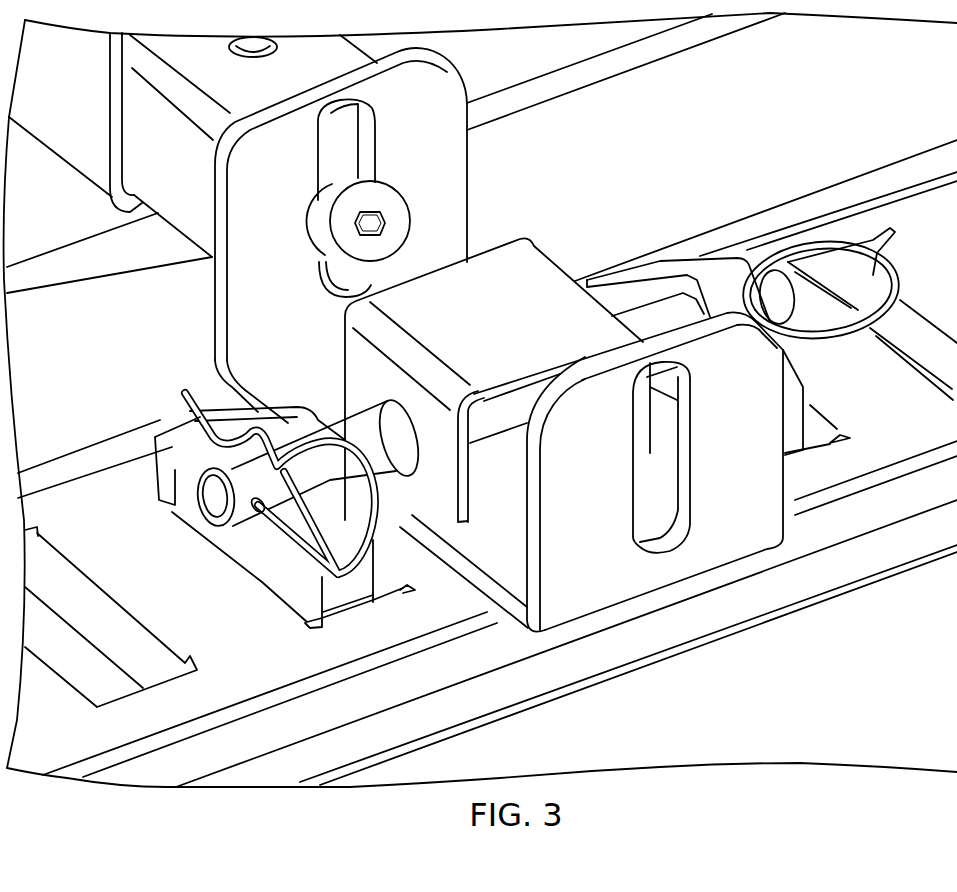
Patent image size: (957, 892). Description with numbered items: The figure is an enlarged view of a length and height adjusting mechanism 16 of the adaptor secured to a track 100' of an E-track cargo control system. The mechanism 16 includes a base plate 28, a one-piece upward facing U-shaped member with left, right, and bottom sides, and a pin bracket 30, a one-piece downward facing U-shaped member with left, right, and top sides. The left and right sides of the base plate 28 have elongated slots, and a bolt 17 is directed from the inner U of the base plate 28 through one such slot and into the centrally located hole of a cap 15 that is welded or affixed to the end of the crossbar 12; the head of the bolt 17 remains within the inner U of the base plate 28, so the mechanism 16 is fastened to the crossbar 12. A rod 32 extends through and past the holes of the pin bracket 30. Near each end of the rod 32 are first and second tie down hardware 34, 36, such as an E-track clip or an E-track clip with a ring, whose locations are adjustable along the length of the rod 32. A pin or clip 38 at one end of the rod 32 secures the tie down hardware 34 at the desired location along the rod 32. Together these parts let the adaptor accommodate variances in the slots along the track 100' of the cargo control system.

The crossbar 12 is at (148, 254).
The cap 15 is at (353, 133).
The length and height adjusting mechanism 16 is at (503, 177).
The bolt 17 is at (392, 195).
The base plate 28 is at (325, 235).
The pin bracket 30 is at (527, 257).
The rod 32 is at (405, 583).
The first tie down hardware 34 is at (313, 588).
The second tie down hardware 36 is at (668, 277).
The pin or clip 38 is at (160, 425).
The track 100' is at (480, 400).